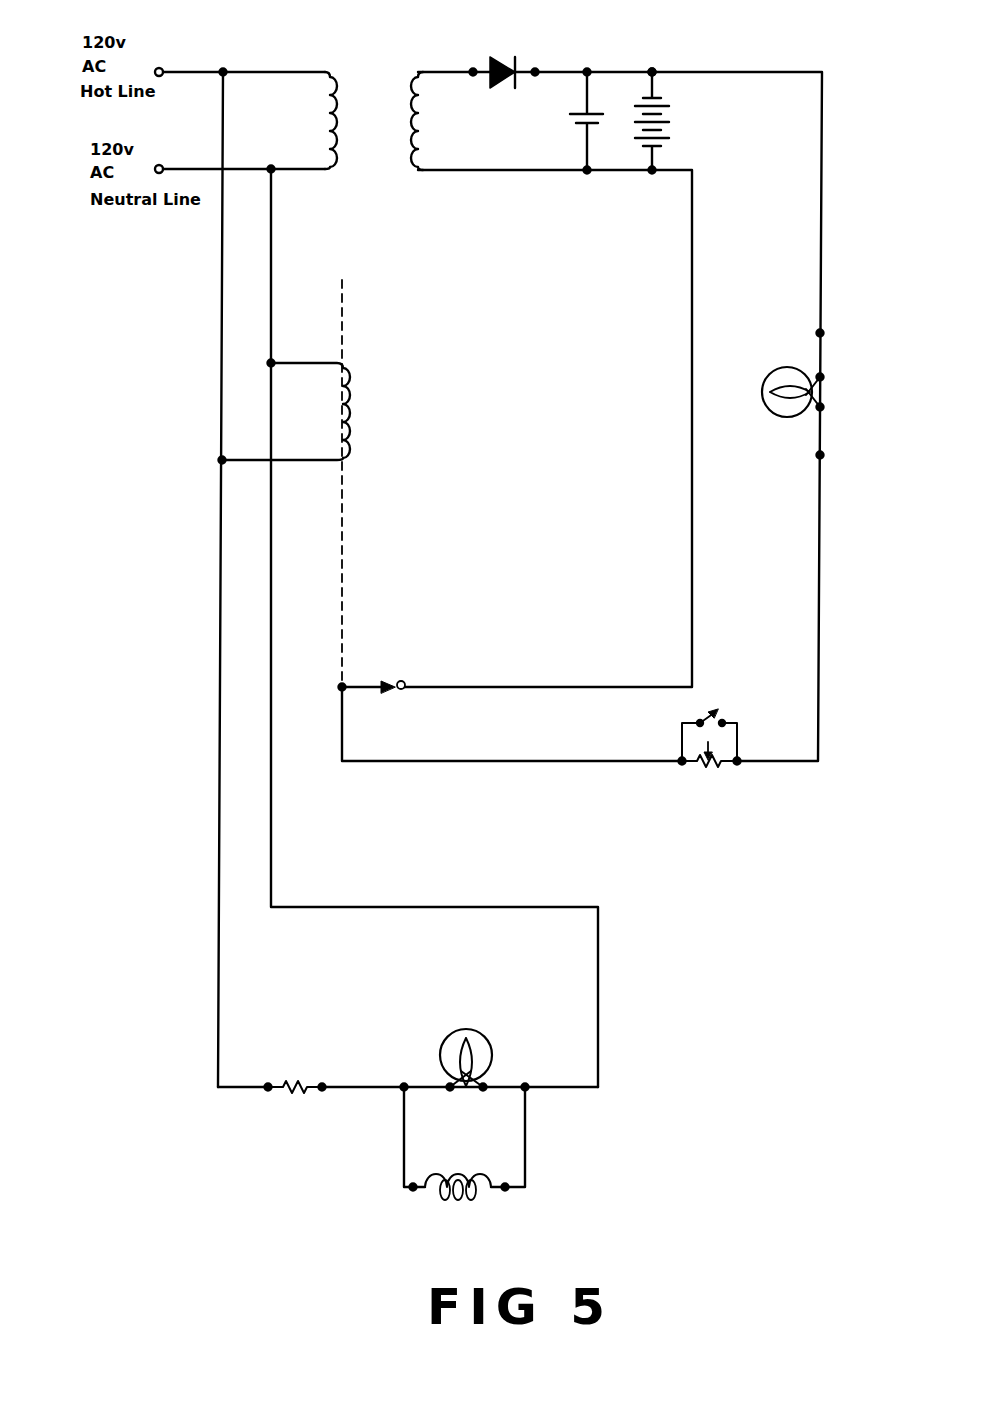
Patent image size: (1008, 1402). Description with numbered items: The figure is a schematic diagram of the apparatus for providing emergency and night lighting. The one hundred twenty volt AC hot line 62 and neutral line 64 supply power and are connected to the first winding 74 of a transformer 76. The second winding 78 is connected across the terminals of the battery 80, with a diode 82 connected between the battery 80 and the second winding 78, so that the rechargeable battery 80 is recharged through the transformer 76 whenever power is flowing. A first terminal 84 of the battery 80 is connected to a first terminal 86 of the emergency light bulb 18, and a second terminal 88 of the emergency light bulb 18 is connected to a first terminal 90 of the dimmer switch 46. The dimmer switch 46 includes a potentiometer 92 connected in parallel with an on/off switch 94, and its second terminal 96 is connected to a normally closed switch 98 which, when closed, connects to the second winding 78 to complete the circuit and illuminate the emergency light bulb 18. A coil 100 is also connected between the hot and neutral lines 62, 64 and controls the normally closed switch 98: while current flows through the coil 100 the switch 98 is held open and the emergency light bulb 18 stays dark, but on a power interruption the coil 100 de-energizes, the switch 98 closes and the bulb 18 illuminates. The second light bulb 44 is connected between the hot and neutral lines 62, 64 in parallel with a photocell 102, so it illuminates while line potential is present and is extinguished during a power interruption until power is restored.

The 120 volt AC hot line 62 is at (159, 54).
The 120 volt AC neutral line 64 is at (158, 154).
The first winding 74 is at (337, 150).
The transformer 76 is at (376, 150).
The second winding 78 is at (409, 113).
The battery 80 is at (668, 132).
The diode 82 is at (502, 57).
The first terminal of the battery 84 is at (652, 72).
The first terminal of the emergency light bulb 86 is at (820, 333).
The second terminal of the emergency light bulb 88 is at (820, 407).
The emergency light bulb 18 is at (774, 370).
The coil 100 is at (350, 403).
The normally closed switch 98 is at (342, 687).
The on/off switch 94 is at (722, 722).
The second terminal of the dimmer switch 96 is at (682, 760).
The dimmer switch 46 is at (709, 788).
The first terminal of the dimmer switch 90 is at (737, 761).
The potentiometer 92 is at (710, 765).
The second light bulb 44 is at (466, 1030).
The photocell 102 is at (492, 1190).